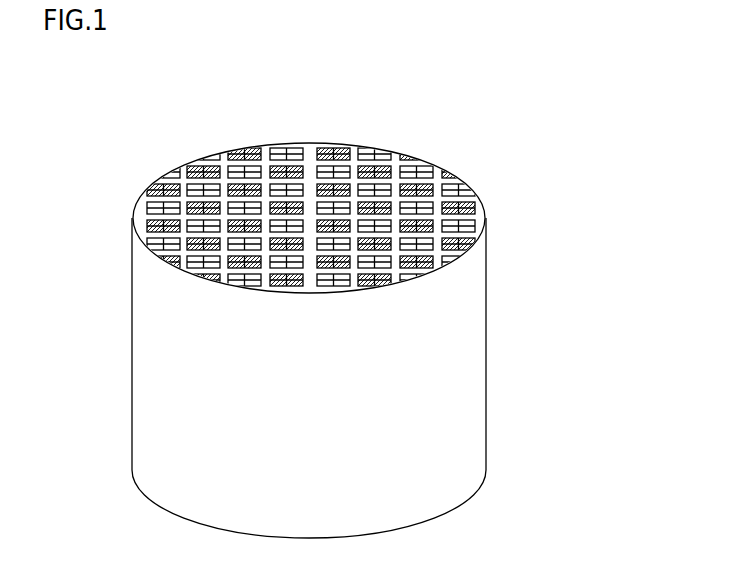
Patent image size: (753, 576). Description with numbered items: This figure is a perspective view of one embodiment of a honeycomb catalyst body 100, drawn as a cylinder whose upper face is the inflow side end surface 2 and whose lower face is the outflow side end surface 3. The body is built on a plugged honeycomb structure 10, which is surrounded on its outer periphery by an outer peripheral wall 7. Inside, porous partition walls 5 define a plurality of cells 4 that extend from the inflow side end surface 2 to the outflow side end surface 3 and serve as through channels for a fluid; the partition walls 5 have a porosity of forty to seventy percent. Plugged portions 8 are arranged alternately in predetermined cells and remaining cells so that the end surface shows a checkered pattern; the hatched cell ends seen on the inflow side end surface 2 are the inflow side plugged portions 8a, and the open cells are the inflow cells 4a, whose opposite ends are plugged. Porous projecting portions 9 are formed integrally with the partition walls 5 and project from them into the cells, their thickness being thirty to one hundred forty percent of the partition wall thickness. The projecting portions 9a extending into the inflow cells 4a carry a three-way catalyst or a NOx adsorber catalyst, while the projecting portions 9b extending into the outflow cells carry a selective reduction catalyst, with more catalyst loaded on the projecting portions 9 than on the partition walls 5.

The honeycomb catalyst body 100 is at (578, 101).
The inflow side end surface 2 is at (308, 143).
The outflow side end surface 3 is at (302, 538).
The cell 4 is at (499, 188).
The inflow cell 4a is at (426, 203).
The partition wall 5 is at (309, 260).
The outer peripheral wall 7 is at (140, 215).
The plugged portion 8 is at (500, 273).
The inflow side plugged portion 8a is at (425, 268).
The projecting portion 9 is at (316, 138).
The inflow cell side projecting portion 9a is at (383, 185).
The outflow cell side projecting portion 9b is at (223, 173).
The plugged honeycomb structure 10 is at (497, 355).